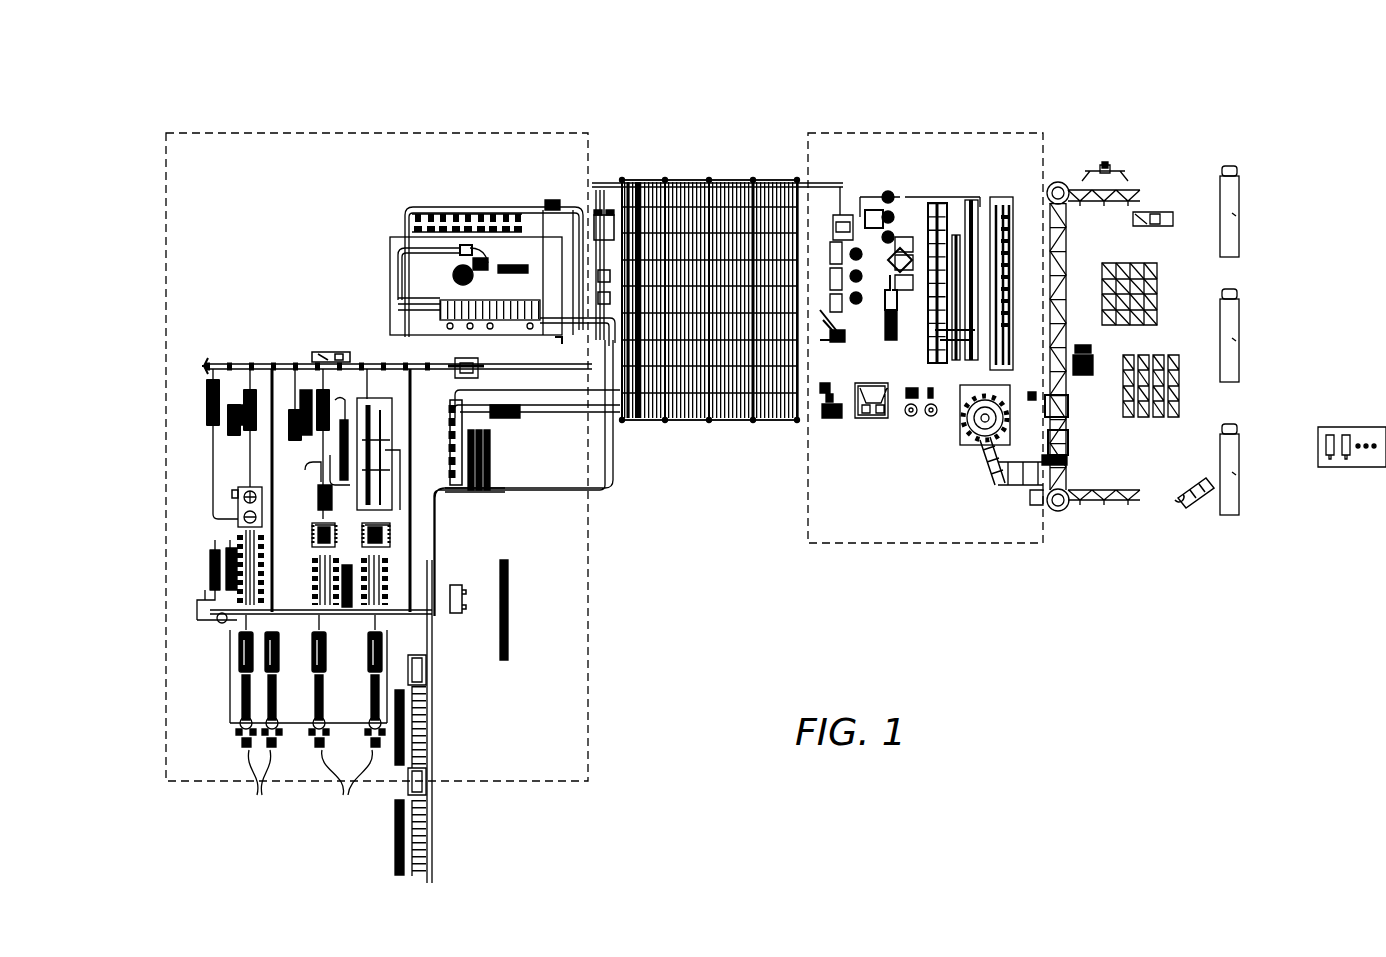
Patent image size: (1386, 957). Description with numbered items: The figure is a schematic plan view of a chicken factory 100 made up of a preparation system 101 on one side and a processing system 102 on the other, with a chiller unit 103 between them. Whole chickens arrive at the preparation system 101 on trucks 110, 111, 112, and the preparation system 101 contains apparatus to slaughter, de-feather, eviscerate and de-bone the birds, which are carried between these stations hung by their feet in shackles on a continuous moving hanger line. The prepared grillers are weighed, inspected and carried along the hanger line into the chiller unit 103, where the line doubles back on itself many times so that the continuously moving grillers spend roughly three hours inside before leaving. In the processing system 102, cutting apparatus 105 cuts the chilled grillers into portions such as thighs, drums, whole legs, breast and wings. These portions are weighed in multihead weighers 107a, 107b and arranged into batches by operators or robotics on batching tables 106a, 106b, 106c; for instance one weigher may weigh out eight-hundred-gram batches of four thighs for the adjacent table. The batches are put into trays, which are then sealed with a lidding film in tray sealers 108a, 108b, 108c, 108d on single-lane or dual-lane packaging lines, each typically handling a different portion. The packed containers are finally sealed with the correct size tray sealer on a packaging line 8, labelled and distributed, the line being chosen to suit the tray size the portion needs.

The chicken factory 100 is at (200, 80).
The preparation system 101 is at (1021, 128).
The processing system 102 is at (559, 128).
The chiller unit 103 is at (701, 176).
The cutting apparatus 105 is at (446, 352).
The batching table 106a is at (248, 542).
The batching table 106b is at (378, 550).
The batching table 106c is at (390, 583).
The multihead weigher 107a is at (245, 497).
The multihead weigher 107b is at (385, 527).
The tray sealer 108a is at (240, 650).
The tray sealer 108b is at (250, 668).
The tray sealer 108c is at (378, 665).
The tray sealer 108d is at (380, 652).
The truck 110 is at (1240, 208).
The truck 111 is at (1240, 339).
The truck 112 is at (1240, 471).
The packaging line 8 is at (311, 776).